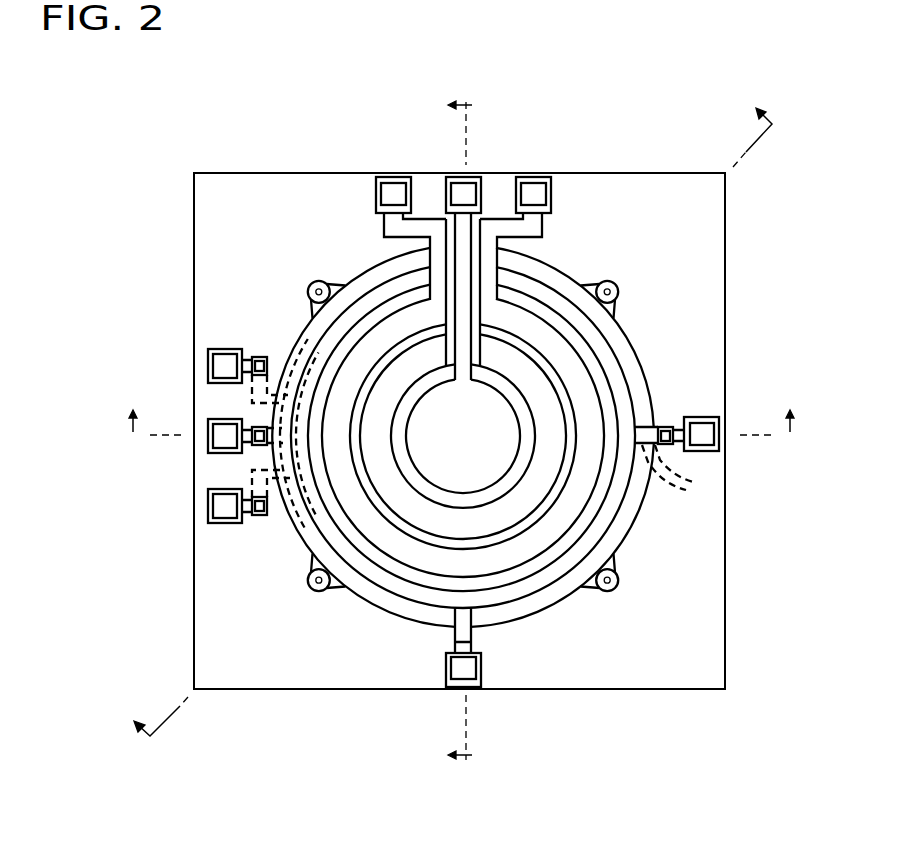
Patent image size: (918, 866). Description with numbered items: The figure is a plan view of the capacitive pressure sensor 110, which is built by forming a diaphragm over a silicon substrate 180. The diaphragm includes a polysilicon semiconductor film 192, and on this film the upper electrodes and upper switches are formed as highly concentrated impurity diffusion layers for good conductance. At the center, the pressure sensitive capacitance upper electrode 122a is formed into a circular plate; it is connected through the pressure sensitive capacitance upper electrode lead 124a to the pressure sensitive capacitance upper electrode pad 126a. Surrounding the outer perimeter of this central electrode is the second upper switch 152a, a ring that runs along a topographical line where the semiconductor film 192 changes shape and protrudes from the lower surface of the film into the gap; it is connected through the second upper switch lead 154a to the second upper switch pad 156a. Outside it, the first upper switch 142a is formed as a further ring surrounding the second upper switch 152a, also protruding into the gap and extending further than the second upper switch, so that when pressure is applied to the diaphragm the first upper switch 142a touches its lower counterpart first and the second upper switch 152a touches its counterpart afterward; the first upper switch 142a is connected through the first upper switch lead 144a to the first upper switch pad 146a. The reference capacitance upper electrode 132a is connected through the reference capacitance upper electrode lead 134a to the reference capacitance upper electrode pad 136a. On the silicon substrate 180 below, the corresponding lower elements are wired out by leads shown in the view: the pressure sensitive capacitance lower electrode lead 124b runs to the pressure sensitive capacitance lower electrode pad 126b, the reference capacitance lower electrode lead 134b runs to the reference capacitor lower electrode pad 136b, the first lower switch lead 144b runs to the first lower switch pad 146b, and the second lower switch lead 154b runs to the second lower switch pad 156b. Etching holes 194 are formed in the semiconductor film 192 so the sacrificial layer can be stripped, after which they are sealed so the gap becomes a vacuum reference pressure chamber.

The capacitive pressure sensor 110 is at (172, 186).
The silicon substrate 180 is at (232, 190).
The pressure sensitive capacitance upper electrode 122a is at (490, 380).
The pressure sensitive capacitance upper electrode lead 124a is at (462, 295).
The pressure sensitive capacitance upper electrode pad 126a is at (460, 193).
The first upper switch 142a is at (540, 385).
The first upper switch lead 144a is at (427, 265).
The first upper switch pad 146a is at (393, 193).
The second upper switch 152a is at (580, 400).
The second upper switch lead 154a is at (488, 313).
The second upper switch pad 156a is at (533, 193).
The reference capacitance upper electrode 132a is at (625, 398).
The reference capacitance upper electrode lead 134a is at (470, 633).
The reference capacitance upper electrode pad 136a is at (455, 672).
The reference capacitance lower electrode lead 134b is at (682, 471).
The reference capacitor lower electrode pad 136b is at (708, 430).
The pressure sensitive capacitance lower electrode lead 124b is at (293, 525).
The pressure sensitive capacitance lower electrode pad 126b is at (228, 436).
The first lower switch lead 144b is at (282, 505).
The first lower switch pad 146b is at (228, 506).
The second lower switch lead 154b is at (286, 372).
The second lower switch pad 156b is at (228, 365).
The semiconductor film 192 is at (385, 598).
The etching holes 194 is at (308, 291).